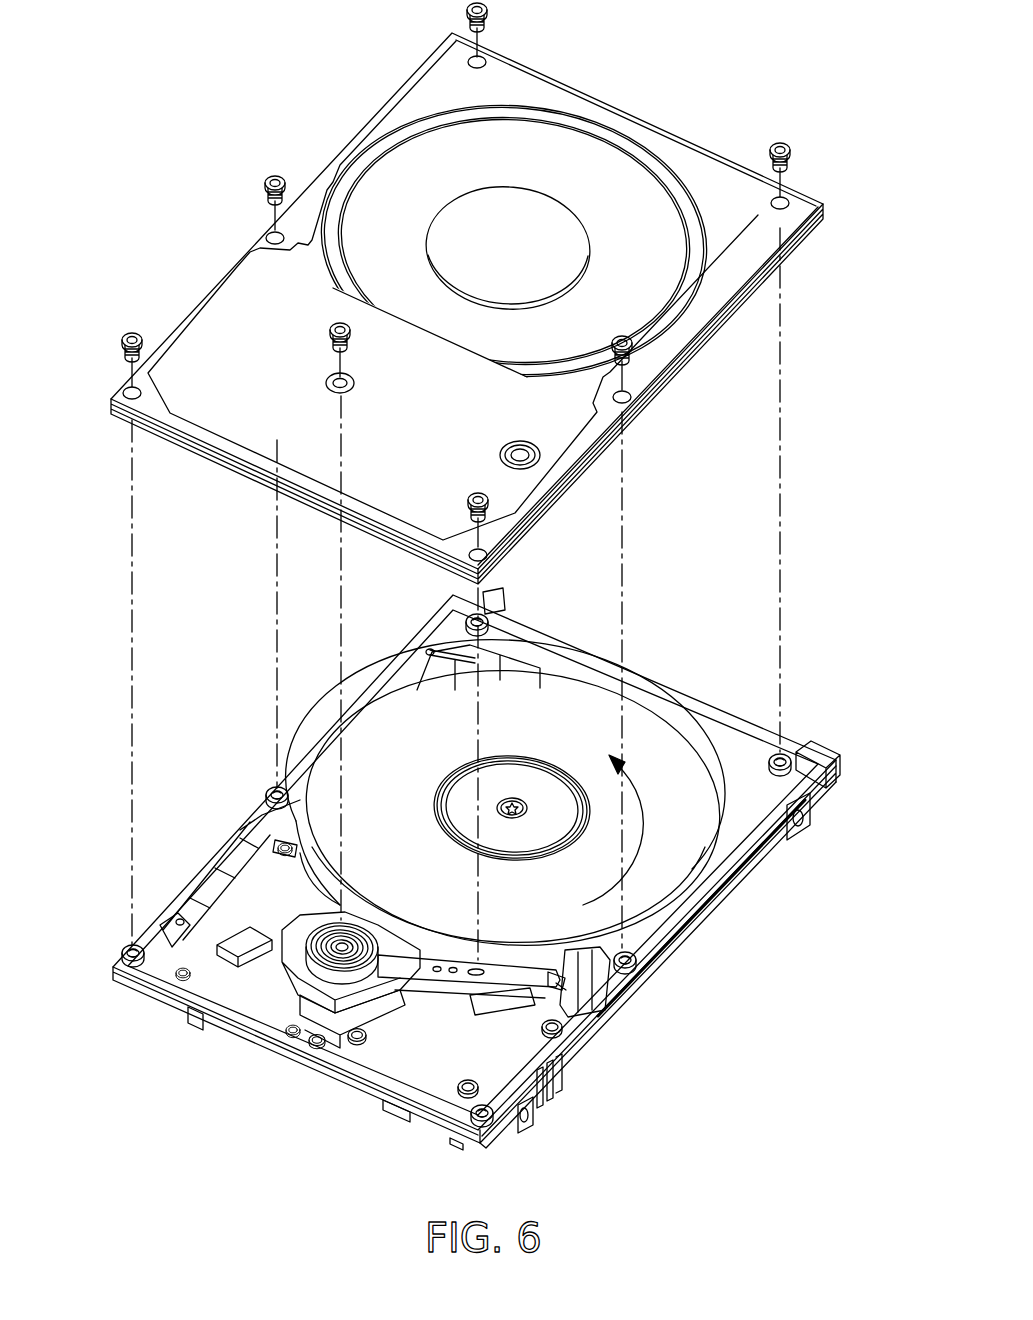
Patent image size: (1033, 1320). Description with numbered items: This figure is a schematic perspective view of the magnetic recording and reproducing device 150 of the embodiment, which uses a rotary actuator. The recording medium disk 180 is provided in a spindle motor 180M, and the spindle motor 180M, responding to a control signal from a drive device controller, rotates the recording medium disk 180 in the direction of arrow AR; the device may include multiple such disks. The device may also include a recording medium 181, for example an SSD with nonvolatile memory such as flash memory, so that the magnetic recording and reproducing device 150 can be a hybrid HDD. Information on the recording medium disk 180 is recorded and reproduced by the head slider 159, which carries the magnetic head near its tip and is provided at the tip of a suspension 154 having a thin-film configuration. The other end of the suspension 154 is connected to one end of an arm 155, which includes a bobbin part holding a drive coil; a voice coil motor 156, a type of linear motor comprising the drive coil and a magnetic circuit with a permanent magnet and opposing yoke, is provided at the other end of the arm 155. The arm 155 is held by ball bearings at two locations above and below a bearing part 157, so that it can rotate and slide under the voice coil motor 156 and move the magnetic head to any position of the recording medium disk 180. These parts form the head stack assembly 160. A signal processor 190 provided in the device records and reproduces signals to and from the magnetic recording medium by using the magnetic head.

The magnetic recording and reproducing device 150 is at (668, 82).
The recording medium disk 180 is at (567, 720).
The spindle motor 180M is at (547, 763).
The arrow AR is at (647, 840).
The head stack assembly 160 is at (423, 970).
The head slider 159 is at (553, 993).
The bearing part 157 is at (313, 940).
The voice coil motor 156 is at (333, 985).
The arm 155 is at (528, 992).
The suspension 154 is at (430, 985).
The recording medium 181 is at (247, 948).
The signal processor 190 is at (441, 1092).